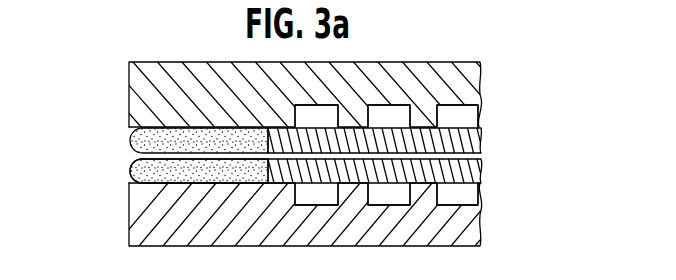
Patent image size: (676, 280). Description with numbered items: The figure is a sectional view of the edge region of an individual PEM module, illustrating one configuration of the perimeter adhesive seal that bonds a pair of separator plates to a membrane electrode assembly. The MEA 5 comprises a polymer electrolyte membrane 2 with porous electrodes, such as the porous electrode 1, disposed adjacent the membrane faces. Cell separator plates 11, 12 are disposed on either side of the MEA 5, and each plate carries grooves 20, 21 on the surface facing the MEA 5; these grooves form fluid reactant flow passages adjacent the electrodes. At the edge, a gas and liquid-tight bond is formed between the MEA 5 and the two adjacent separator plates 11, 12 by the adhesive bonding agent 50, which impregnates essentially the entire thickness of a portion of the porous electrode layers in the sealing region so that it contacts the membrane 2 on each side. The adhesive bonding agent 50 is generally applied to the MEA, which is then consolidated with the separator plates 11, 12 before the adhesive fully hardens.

The cell separator plate 11 is at (450, 73).
The cell separator plate 12 is at (465, 220).
The grooves 20 is at (401, 116).
The grooves 21 is at (463, 200).
The porous electrode 1 is at (460, 137).
The MEA 5 is at (284, 135).
The adhesive bonding agent 50 is at (130, 170).
The polymer electrolyte membrane 2 is at (138, 156).